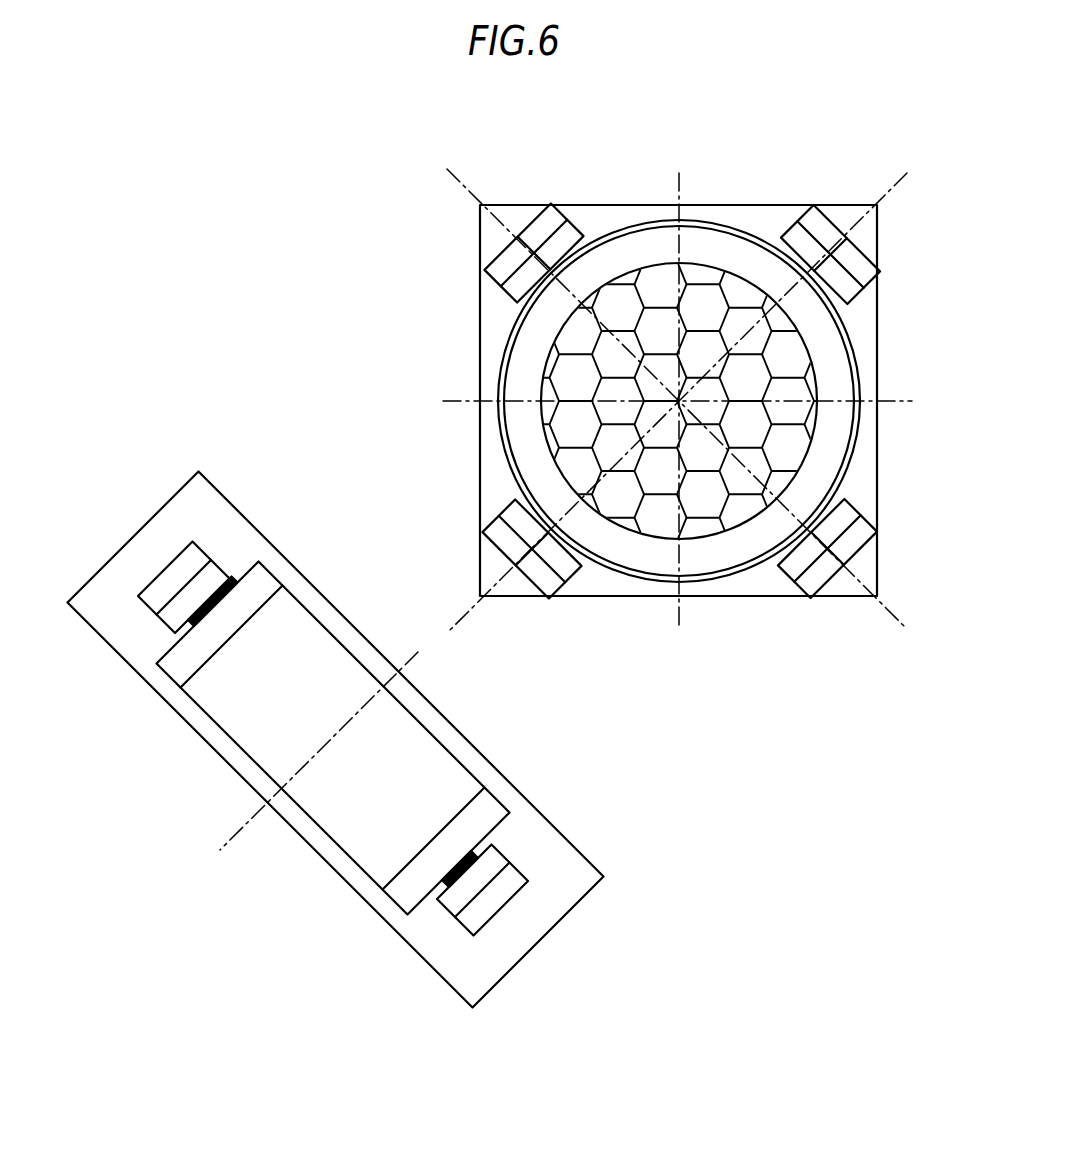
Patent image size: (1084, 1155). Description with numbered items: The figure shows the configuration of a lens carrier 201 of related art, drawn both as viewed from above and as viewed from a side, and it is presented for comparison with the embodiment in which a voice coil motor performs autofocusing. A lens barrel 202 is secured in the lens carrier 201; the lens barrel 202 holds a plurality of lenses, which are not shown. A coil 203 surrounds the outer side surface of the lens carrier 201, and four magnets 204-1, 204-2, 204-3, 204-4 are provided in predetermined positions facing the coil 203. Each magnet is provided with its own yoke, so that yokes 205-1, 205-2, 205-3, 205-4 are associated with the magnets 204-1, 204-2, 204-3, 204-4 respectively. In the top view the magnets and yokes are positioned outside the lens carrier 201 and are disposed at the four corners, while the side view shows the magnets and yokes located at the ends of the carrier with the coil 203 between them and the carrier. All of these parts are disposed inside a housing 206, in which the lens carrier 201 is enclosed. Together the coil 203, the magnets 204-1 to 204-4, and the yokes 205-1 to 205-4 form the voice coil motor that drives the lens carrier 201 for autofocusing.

The lens carrier 201 is at (620, 545).
The lens barrel 202 is at (782, 449).
The coil 203 is at (717, 580).
The magnet 204-1 is at (790, 567).
The magnet 204-2 is at (514, 510).
The magnet 204-3 is at (566, 233).
The magnet 204-4 is at (800, 242).
The yoke 205-1 is at (822, 570).
The yoke 205-2 is at (500, 527).
The yoke 205-3 is at (542, 230).
The yoke 205-4 is at (822, 227).
The housing 206 is at (878, 563).